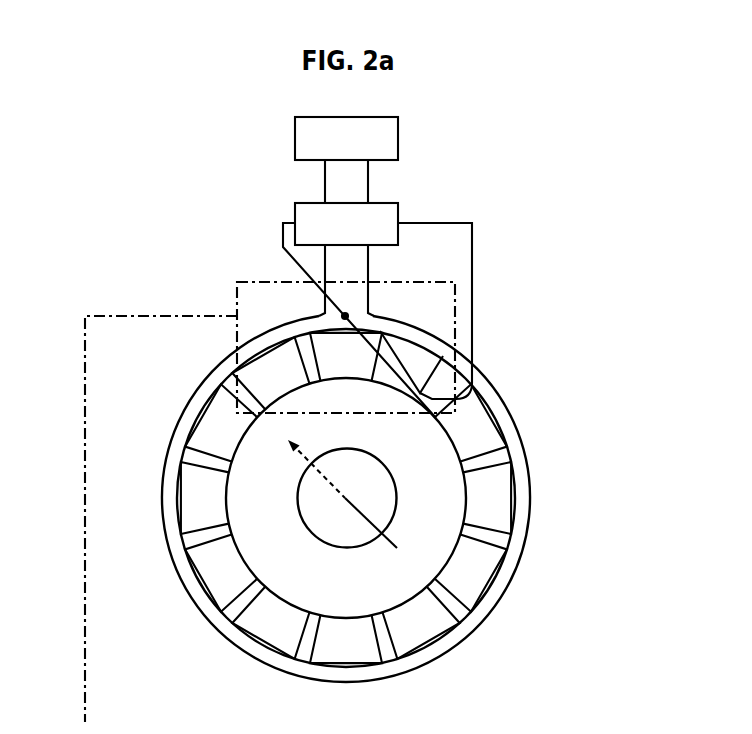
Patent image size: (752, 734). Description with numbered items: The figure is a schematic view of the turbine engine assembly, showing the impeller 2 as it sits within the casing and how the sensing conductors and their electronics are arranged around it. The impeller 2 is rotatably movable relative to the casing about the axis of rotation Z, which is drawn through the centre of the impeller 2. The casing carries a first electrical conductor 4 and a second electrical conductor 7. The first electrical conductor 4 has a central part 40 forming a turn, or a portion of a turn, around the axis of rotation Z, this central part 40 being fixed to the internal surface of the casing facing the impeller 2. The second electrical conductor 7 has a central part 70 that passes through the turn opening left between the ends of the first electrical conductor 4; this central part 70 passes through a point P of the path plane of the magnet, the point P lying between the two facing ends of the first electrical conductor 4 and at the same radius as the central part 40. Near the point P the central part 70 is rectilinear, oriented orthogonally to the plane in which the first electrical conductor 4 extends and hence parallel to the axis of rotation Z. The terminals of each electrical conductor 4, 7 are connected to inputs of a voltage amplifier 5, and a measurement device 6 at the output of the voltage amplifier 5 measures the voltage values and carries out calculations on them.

The impeller 2 is at (513, 567).
The first electrical conductor 4 is at (531, 498).
The central part of the first electrical conductor 40 is at (524, 421).
The voltage amplifier 5 is at (339, 236).
The measurement device 6 is at (339, 151).
The second electrical conductor 7 is at (474, 317).
The central part of the second electrical conductor 70 is at (288, 252).
The point P is at (359, 320).
The axis of rotation Z is at (391, 537).